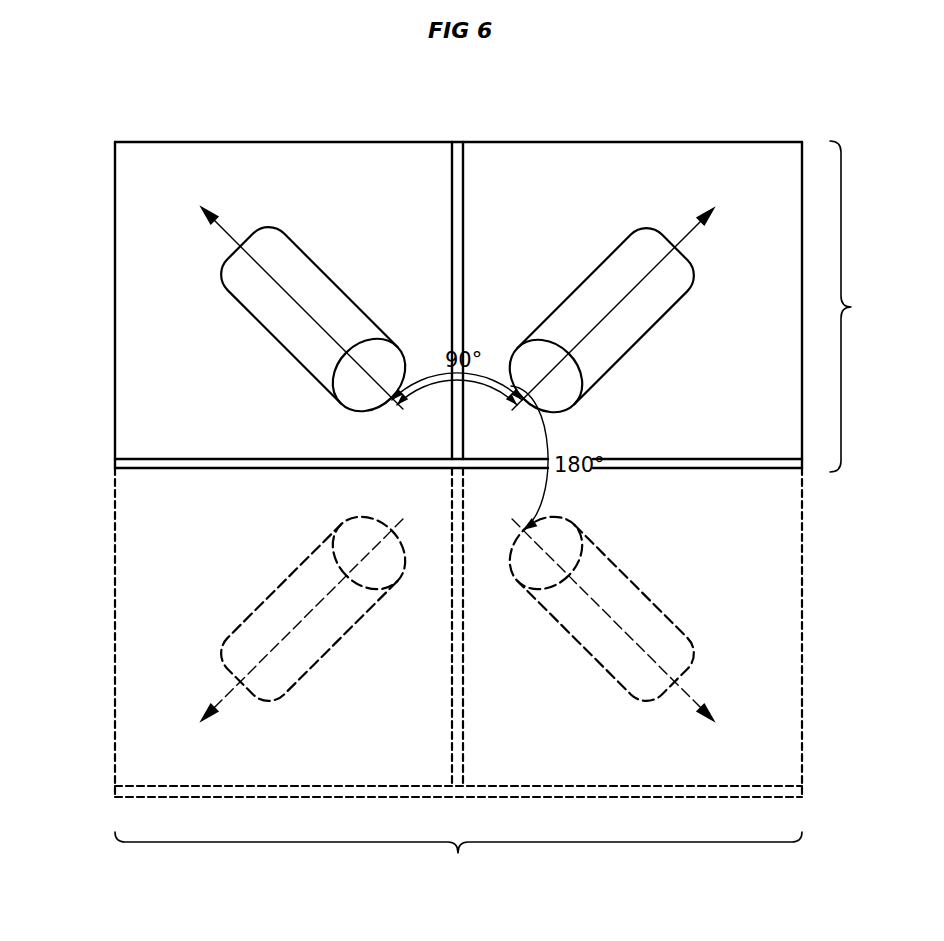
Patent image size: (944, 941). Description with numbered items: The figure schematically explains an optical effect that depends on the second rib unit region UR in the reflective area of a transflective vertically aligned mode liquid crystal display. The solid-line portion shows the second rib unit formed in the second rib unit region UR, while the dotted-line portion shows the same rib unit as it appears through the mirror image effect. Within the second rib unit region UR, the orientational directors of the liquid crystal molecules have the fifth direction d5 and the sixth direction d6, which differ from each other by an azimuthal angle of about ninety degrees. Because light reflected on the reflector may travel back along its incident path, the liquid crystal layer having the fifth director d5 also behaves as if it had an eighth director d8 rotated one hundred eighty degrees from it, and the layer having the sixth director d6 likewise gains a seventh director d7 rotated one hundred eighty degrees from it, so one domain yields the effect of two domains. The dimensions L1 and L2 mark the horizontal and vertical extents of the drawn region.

The second rib unit region UR is at (115, 163).
The fifth direction d5 is at (296, 305).
The sixth direction d6 is at (623, 306).
The seventh director d7 is at (295, 624).
The eighth director d8 is at (623, 624).
The width of unit region L1 is at (458, 861).
The height of sub-region L2 is at (856, 306).